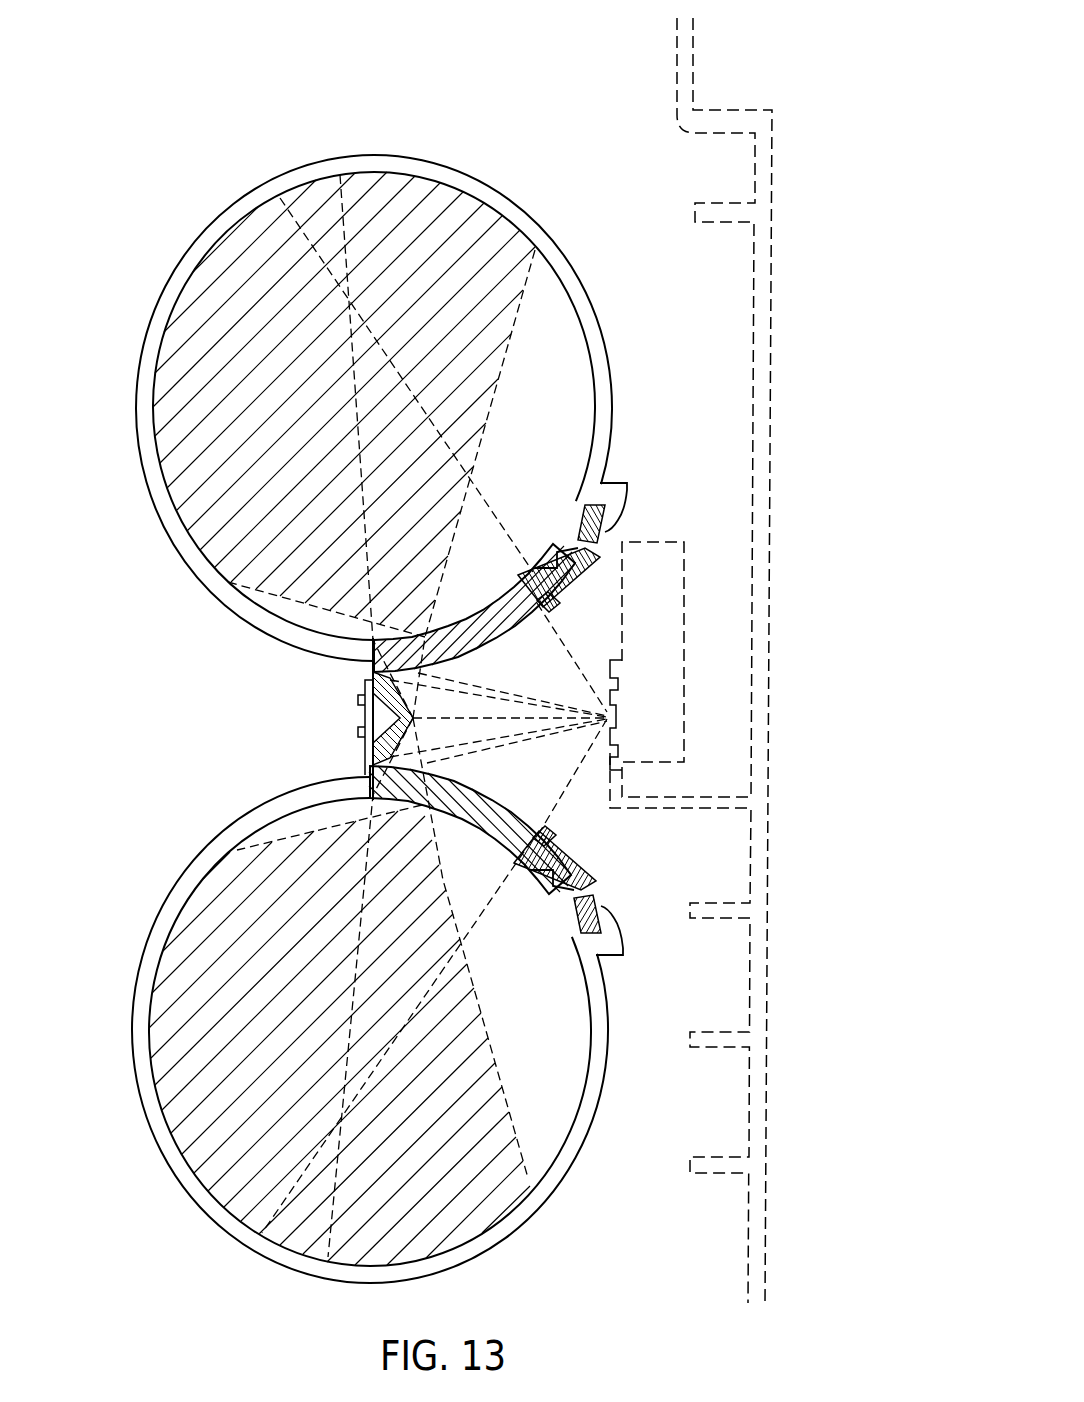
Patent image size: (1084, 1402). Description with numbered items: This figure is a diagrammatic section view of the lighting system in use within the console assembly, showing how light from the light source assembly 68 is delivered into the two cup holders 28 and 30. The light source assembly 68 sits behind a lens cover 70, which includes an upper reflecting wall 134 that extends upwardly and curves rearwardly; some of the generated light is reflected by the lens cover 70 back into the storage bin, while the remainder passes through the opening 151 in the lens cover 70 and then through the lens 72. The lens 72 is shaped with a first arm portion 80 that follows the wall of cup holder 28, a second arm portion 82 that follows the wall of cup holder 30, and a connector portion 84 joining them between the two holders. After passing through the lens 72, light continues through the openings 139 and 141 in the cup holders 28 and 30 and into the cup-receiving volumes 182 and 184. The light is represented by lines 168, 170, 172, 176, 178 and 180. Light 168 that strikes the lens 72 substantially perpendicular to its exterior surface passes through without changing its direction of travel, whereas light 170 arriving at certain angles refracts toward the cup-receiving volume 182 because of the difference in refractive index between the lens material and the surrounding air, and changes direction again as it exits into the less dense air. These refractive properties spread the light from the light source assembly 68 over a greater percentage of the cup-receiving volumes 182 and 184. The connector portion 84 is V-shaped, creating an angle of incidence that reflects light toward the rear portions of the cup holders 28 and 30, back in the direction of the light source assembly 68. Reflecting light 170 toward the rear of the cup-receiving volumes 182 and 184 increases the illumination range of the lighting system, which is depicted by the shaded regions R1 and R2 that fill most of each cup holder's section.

The cup holder 28 is at (482, 182).
The cup holder 30 is at (495, 1250).
The shaded region R1 is at (190, 356).
The shaded region R2 is at (190, 980).
The light source assembly 68 is at (683, 592).
The lens cover 70 is at (607, 535).
The lens 72 is at (540, 578).
The first arm portion 80 is at (475, 622).
The second arm portion 82 is at (480, 825).
The connector portion 84 is at (370, 714).
The upper reflecting wall 134 is at (620, 700).
The opening 139 is at (545, 545).
The opening 141 is at (515, 950).
The opening 151 is at (560, 608).
The light 168 is at (485, 500).
The light 170 is at (498, 690).
The light 172 is at (500, 702).
The light 176 is at (495, 745).
The light 178 is at (498, 752).
The light 180 is at (478, 948).
The cup-receiving volume 182 is at (383, 200).
The cup-receiving volume 184 is at (208, 1170).